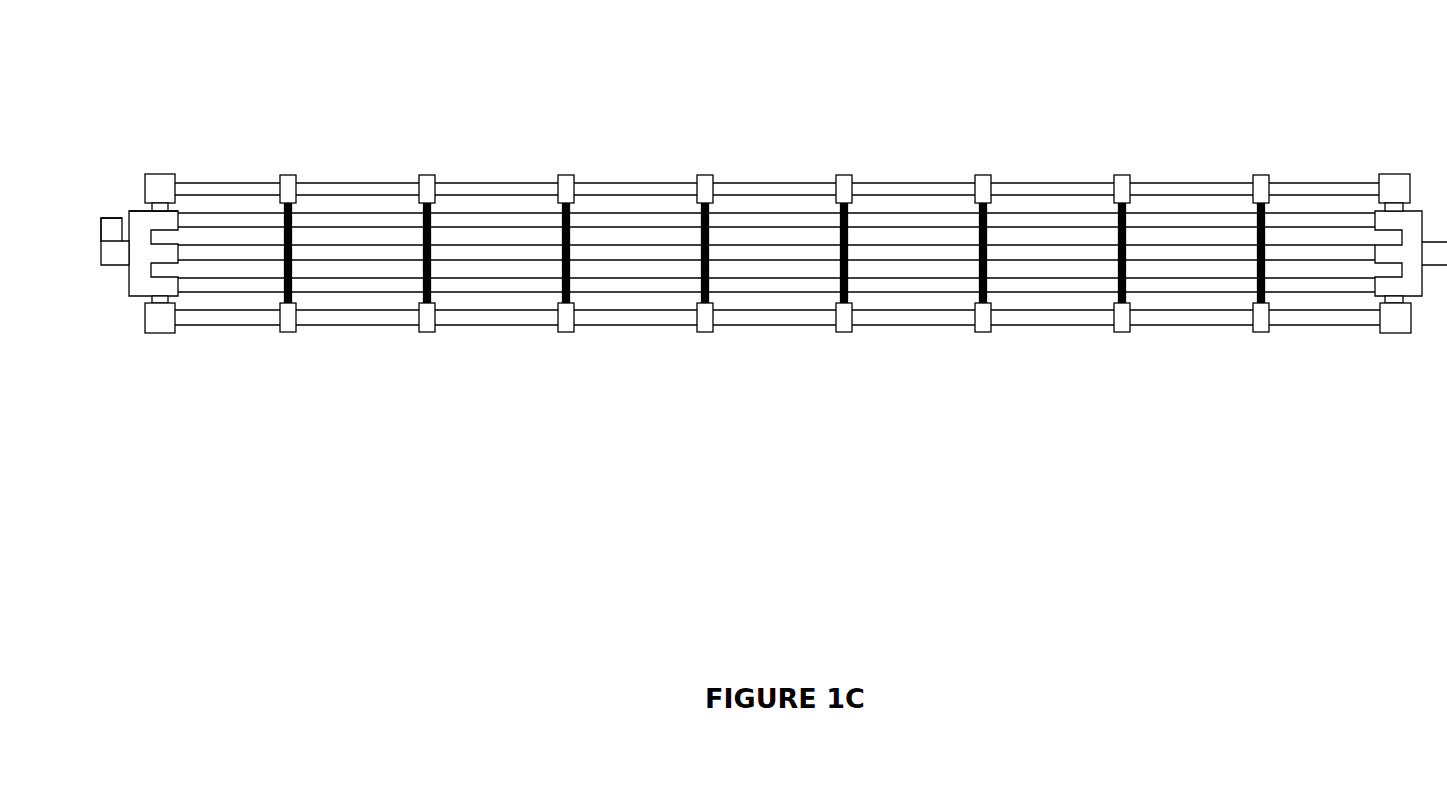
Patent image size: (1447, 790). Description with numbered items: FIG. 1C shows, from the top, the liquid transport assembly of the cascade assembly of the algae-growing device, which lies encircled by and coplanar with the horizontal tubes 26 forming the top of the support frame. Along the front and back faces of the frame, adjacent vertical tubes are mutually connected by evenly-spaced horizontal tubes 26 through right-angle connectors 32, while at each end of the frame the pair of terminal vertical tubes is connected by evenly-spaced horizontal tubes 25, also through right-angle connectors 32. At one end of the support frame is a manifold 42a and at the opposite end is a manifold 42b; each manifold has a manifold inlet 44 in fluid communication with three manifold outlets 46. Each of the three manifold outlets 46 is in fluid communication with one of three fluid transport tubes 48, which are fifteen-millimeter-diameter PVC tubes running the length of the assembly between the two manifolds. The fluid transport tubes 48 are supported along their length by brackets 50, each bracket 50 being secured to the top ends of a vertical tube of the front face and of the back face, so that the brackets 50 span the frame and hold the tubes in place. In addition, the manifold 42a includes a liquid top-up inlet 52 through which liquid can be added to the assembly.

The horizontal tubes 25 is at (127, 212).
The horizontal tubes 26 is at (792, 183).
The right-angle connectors 32 is at (705, 173).
The manifold 42a is at (140, 287).
The manifold 42b is at (1412, 281).
The manifold inlet 44 is at (101, 265).
The manifold outlets 46 is at (178, 220).
The fluid transport tubes 48 is at (395, 285).
The brackets 50 is at (1256, 238).
The liquid top-up inlet 52 is at (101, 218).